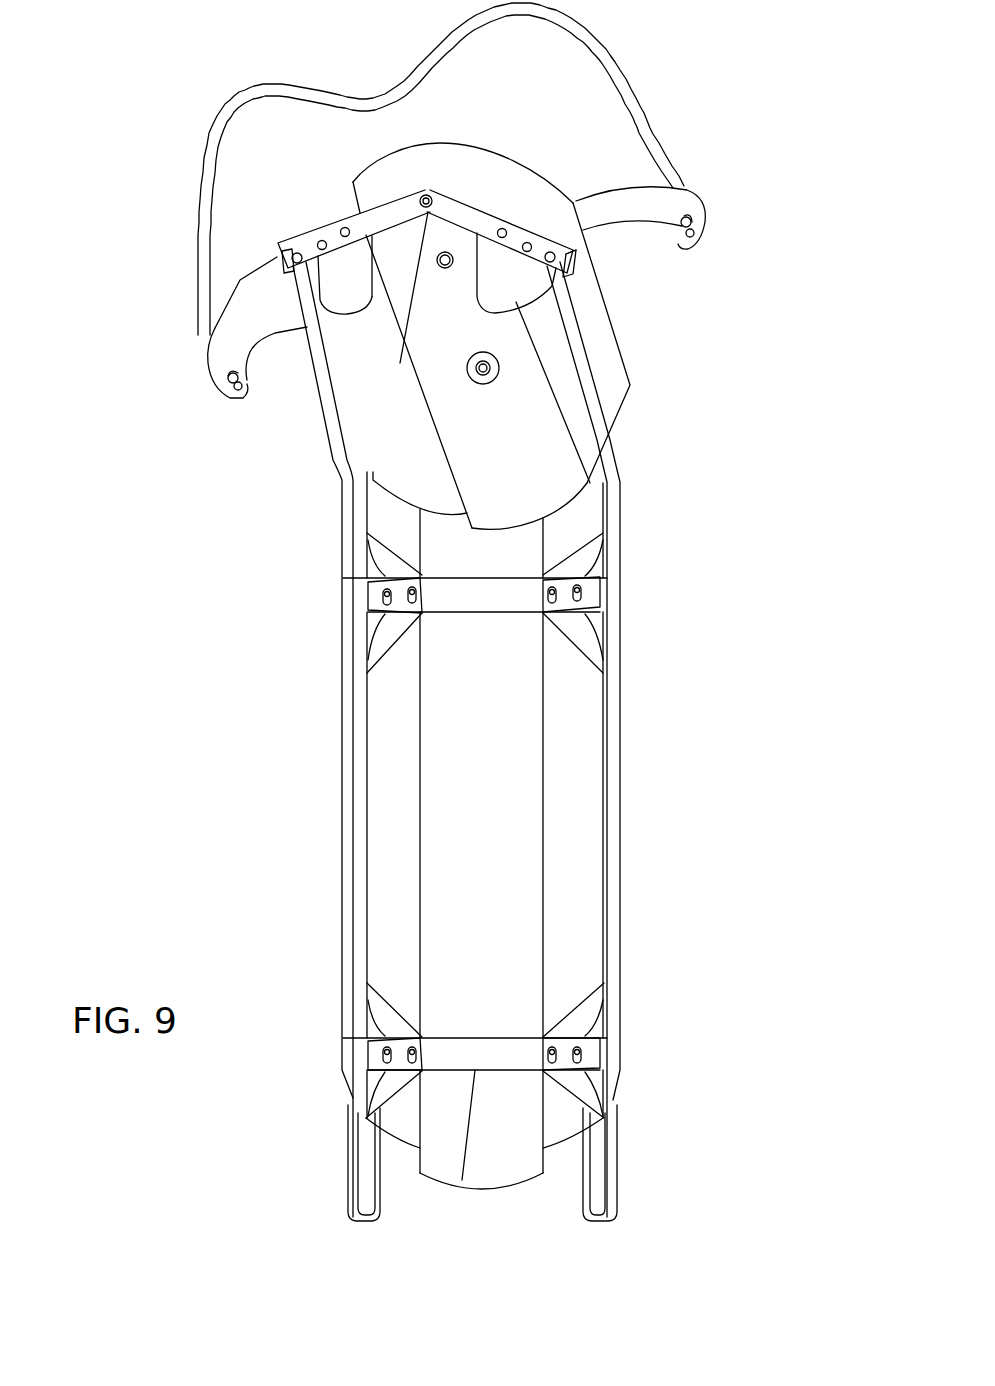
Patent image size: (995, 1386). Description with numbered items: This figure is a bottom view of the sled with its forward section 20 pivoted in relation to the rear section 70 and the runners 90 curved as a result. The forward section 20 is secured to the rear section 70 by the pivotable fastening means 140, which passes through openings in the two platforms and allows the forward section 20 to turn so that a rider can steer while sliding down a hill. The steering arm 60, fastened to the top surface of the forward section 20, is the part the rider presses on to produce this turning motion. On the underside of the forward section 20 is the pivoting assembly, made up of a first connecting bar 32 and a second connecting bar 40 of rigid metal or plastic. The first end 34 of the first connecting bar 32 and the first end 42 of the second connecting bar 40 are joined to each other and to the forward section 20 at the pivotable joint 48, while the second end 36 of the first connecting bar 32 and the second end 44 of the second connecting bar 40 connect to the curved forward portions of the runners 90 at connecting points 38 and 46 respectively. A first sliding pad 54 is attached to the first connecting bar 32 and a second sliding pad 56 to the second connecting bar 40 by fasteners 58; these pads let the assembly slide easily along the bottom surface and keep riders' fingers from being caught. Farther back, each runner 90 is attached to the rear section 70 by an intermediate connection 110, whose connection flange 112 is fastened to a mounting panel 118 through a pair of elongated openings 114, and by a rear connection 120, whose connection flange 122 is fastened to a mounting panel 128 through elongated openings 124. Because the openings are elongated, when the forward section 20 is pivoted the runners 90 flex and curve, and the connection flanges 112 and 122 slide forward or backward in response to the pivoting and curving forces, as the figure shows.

The forward section 20 is at (430, 143).
The first connecting bar 32 is at (487, 214).
The first end 34 is at (400, 363).
The second end 36 is at (562, 256).
The connecting point 38 is at (562, 266).
The second connecting bar 40 is at (333, 224).
The first end 42 is at (423, 192).
The second end 44 is at (307, 327).
The connecting point 46 is at (277, 257).
The pivotable joint 48 is at (433, 192).
The first sliding pad 54 is at (490, 313).
The second sliding pad 56 is at (338, 378).
The fasteners 58 is at (320, 241).
The steering arm 60 is at (690, 192).
The rear section 70 is at (478, 1188).
The runners 90 is at (358, 833).
The intermediate connection 110 is at (370, 570).
The connection flange 112 is at (368, 600).
The elongated openings 114 is at (412, 605).
The mounting panel 118 is at (453, 605).
The rear connection 120 is at (377, 1013).
The connection flange 122 is at (368, 1062).
The elongated openings 124 is at (415, 1045).
The mounting panel 128 is at (462, 1180).
The pivotable fastening means 140 is at (484, 380).